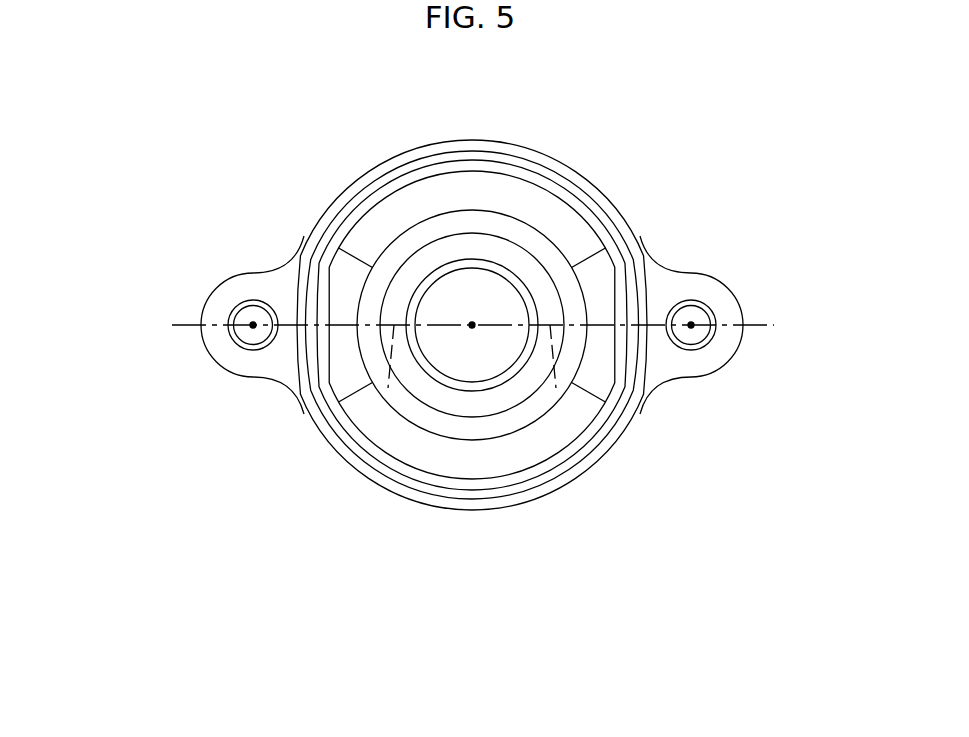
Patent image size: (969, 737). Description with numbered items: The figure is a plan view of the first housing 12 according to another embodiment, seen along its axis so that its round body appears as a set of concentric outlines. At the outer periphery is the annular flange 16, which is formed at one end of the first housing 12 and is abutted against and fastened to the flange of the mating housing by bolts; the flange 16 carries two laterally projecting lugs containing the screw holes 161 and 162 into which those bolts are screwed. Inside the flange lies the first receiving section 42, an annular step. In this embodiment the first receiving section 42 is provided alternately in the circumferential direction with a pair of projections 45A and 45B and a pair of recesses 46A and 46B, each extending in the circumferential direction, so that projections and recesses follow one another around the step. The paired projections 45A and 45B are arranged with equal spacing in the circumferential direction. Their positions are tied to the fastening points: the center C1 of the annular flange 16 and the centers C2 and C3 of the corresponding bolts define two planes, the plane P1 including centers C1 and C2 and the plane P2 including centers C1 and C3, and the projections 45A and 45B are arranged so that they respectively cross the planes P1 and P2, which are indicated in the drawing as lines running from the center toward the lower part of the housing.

The first housing 12 is at (385, 153).
The annular flange 16 is at (592, 192).
The first receiving section 42 is at (350, 292).
The projection 45A is at (332, 371).
The projection 45B is at (612, 371).
The recess 46A is at (470, 185).
The recess 46B is at (515, 452).
The screw hole 161 is at (237, 311).
The screw hole 162 is at (707, 311).
The center of the annular flange C1 is at (472, 325).
The center of bolt C2 is at (252, 331).
The center of bolt C3 is at (692, 331).
The plane P1 is at (388, 388).
The plane P2 is at (556, 388).